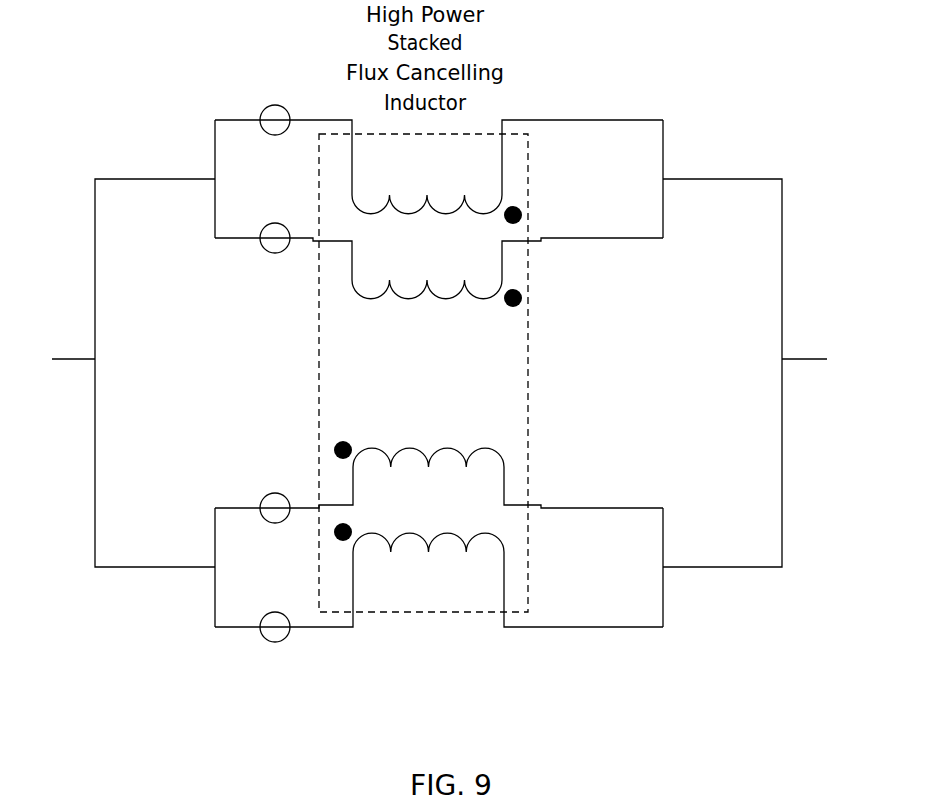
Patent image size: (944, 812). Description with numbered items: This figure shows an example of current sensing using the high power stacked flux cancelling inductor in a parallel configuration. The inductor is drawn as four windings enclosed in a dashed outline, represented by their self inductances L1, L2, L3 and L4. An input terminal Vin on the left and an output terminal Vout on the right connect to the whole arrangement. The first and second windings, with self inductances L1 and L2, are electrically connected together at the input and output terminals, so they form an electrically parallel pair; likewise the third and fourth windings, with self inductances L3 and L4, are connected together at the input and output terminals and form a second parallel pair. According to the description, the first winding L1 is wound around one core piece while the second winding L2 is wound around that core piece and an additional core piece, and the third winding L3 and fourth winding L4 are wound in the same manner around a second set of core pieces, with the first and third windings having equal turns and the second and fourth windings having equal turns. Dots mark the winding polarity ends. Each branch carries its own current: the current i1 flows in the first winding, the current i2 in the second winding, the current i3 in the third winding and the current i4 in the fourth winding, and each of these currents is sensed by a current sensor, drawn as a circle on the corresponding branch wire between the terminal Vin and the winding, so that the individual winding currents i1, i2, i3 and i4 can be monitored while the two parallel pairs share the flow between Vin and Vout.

The self inductance of the first Winding L1 is at (439, 182).
The self inductance of the second Winding L2 is at (439, 286).
The self inductance of the third Winding L3 is at (439, 464).
The self inductance of the fourth Winding L4 is at (439, 567).
The current in the first Winding i1 is at (276, 106).
The current in the second Winding i2 is at (273, 253).
The current in the third Winding i3 is at (273, 494).
The current in the fourth Winding i4 is at (272, 642).
The input voltage Vin is at (116, 373).
The output voltage Vout is at (773, 373).